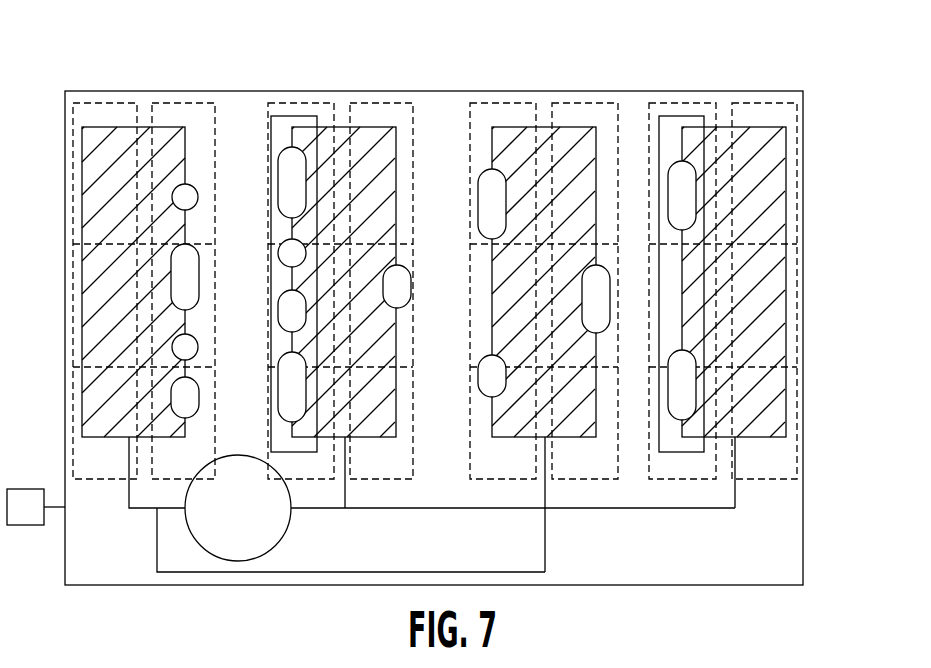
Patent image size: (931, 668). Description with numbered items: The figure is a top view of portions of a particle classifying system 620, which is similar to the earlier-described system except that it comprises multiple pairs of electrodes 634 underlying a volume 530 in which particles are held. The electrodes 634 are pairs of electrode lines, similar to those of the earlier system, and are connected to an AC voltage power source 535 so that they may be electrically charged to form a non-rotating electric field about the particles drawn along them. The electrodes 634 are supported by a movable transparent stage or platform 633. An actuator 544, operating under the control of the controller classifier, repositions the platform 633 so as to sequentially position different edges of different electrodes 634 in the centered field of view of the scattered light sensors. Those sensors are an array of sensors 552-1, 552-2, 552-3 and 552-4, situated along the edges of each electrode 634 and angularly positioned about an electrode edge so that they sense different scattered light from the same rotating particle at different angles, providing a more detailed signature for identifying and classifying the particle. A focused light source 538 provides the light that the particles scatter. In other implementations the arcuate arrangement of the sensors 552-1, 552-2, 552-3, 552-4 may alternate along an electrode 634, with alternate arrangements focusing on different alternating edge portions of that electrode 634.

The particle classifying system 620 is at (124, 70).
The volume 530 is at (243, 143).
The movable transparent stage or platform 633 is at (803, 525).
The actuator 544 is at (26, 489).
The AC voltage power source 535 is at (278, 540).
The sensor 552-1 is at (160, 102).
The sensor 552-2 is at (350, 102).
The sensor 552-3 is at (567, 102).
The sensor 552-4 is at (745, 102).
The electrodes 634 is at (82, 170).
The focused light source 538 is at (317, 452).